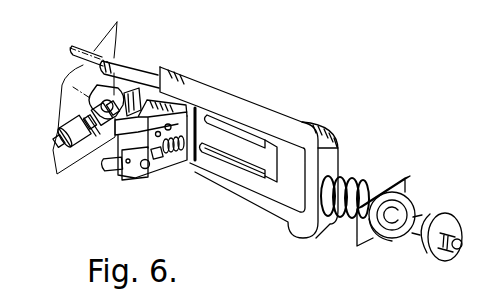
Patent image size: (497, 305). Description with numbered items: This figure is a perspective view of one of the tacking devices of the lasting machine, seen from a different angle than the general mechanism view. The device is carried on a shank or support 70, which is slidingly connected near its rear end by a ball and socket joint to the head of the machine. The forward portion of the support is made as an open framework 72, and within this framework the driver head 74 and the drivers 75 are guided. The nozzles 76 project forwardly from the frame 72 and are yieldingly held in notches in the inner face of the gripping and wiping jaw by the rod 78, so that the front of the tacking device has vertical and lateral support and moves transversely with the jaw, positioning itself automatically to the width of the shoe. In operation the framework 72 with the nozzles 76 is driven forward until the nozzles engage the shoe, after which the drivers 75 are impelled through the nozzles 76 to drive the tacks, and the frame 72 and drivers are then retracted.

The shank or support 70 is at (410, 195).
The open framework 72 is at (298, 128).
The driver head 74 is at (338, 145).
The drivers 75 is at (246, 131).
The nozzles 76 is at (128, 72).
The rod 78 is at (58, 148).